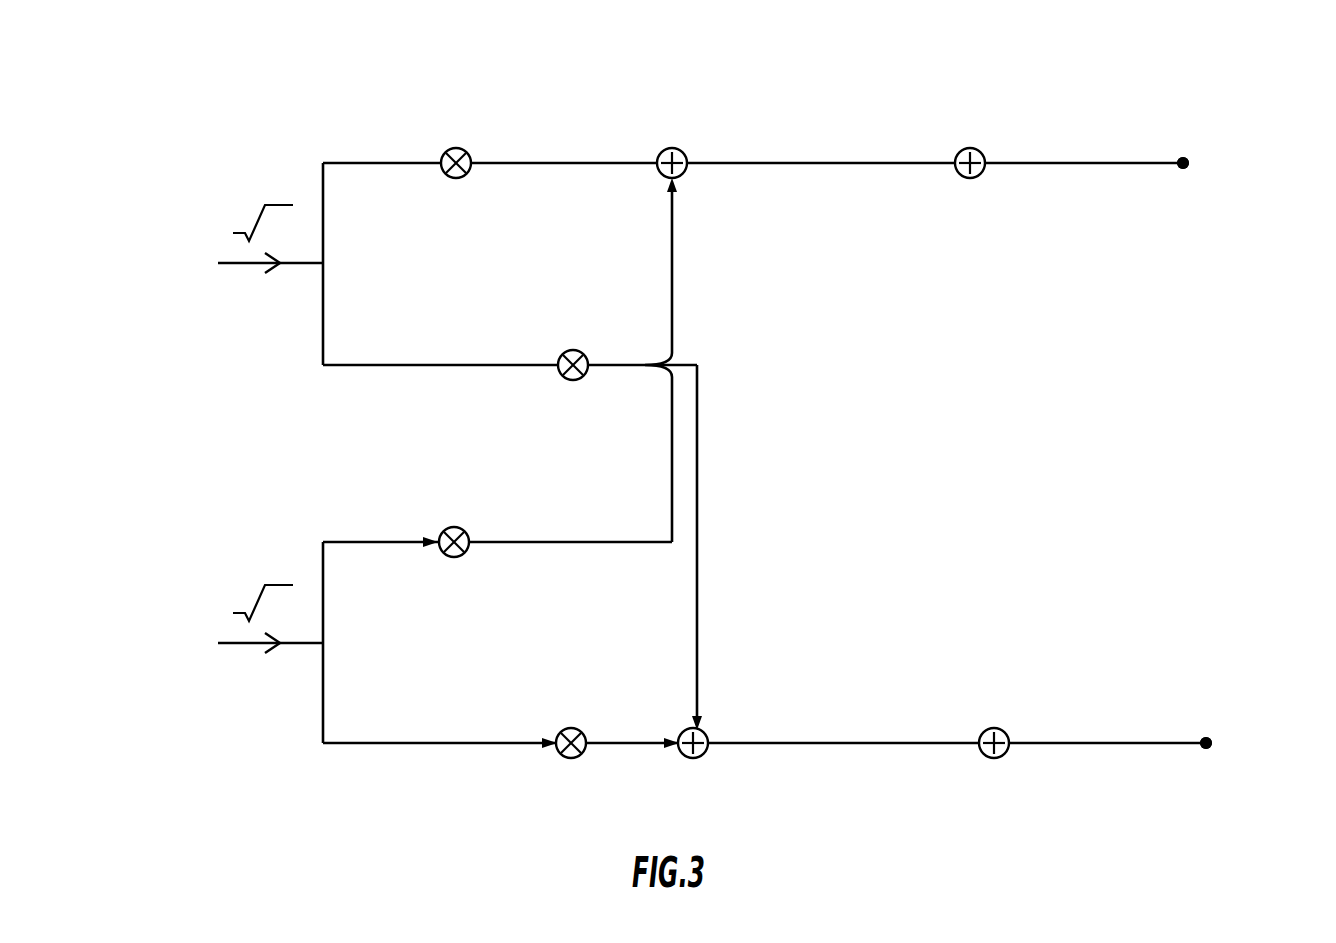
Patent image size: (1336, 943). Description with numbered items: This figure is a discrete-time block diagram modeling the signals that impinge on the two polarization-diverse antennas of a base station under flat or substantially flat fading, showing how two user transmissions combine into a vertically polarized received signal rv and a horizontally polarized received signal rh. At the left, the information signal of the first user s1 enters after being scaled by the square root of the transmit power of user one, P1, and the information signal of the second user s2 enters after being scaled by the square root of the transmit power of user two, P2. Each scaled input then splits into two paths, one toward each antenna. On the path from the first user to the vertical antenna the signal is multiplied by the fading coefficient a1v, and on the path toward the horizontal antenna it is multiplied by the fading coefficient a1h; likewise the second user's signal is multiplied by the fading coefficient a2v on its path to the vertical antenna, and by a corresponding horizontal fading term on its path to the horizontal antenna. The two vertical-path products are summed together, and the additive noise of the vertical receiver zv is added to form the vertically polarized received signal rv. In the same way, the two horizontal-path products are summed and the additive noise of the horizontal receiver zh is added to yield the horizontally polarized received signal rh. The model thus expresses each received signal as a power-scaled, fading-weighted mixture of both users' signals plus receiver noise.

The information signal of user 1 s1 is at (243, 268).
The information signal of user 2 s2 is at (243, 648).
The power of signal transmitted from user 1 P1 is at (263, 231).
The power of signal transmitted from user 2 P2 is at (263, 611).
The fading for user 1 seen by the vertically polarized antenna a1v is at (457, 135).
The fading for user 1 seen by the horizontally polarized antenna a1h is at (573, 337).
The fading for user 2 seen by the vertically polarized antenna a2v is at (454, 514).
The additive noise on the vertical receiver zv is at (972, 136).
The additive noise on the horizontal receiver zh is at (994, 716).
The signal received by the vertically polarized antenna rv is at (1212, 167).
The signal received by the horizontally polarized antenna rh is at (1236, 747).